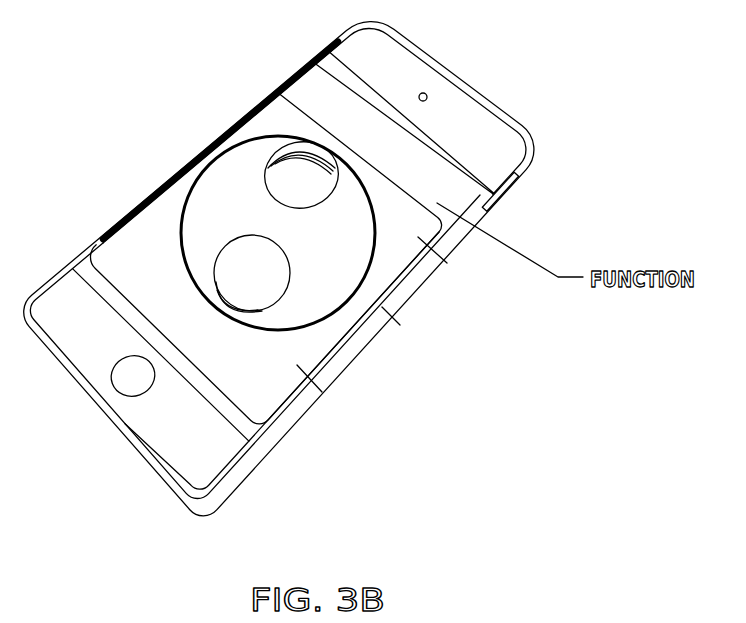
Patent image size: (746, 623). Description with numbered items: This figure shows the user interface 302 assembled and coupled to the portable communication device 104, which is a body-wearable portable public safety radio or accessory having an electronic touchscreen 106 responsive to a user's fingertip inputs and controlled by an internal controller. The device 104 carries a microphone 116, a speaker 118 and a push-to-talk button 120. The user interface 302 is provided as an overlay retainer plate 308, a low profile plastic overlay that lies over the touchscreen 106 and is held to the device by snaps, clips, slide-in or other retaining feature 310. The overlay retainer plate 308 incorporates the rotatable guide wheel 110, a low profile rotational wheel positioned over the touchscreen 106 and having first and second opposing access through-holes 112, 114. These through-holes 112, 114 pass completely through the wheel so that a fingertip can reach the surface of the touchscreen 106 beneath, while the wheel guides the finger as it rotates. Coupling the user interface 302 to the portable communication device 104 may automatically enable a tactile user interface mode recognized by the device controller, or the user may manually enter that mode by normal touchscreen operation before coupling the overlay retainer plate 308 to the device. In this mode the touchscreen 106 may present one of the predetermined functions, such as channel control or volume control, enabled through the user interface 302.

The portable communication device 104 is at (541, 147).
The touchscreen 106 is at (272, 268).
The rotatable guide wheel 110 is at (243, 193).
The first access through-hole 112 is at (228, 247).
The second access through-hole 114 is at (268, 160).
The microphone 116 is at (426, 94).
The speaker 118 is at (116, 398).
The push-to-talk (PTT) button 120 is at (506, 200).
The user interface 302 is at (248, 67).
The overlay retainer plate 308 is at (447, 263).
The retaining feature 310 is at (400, 325).